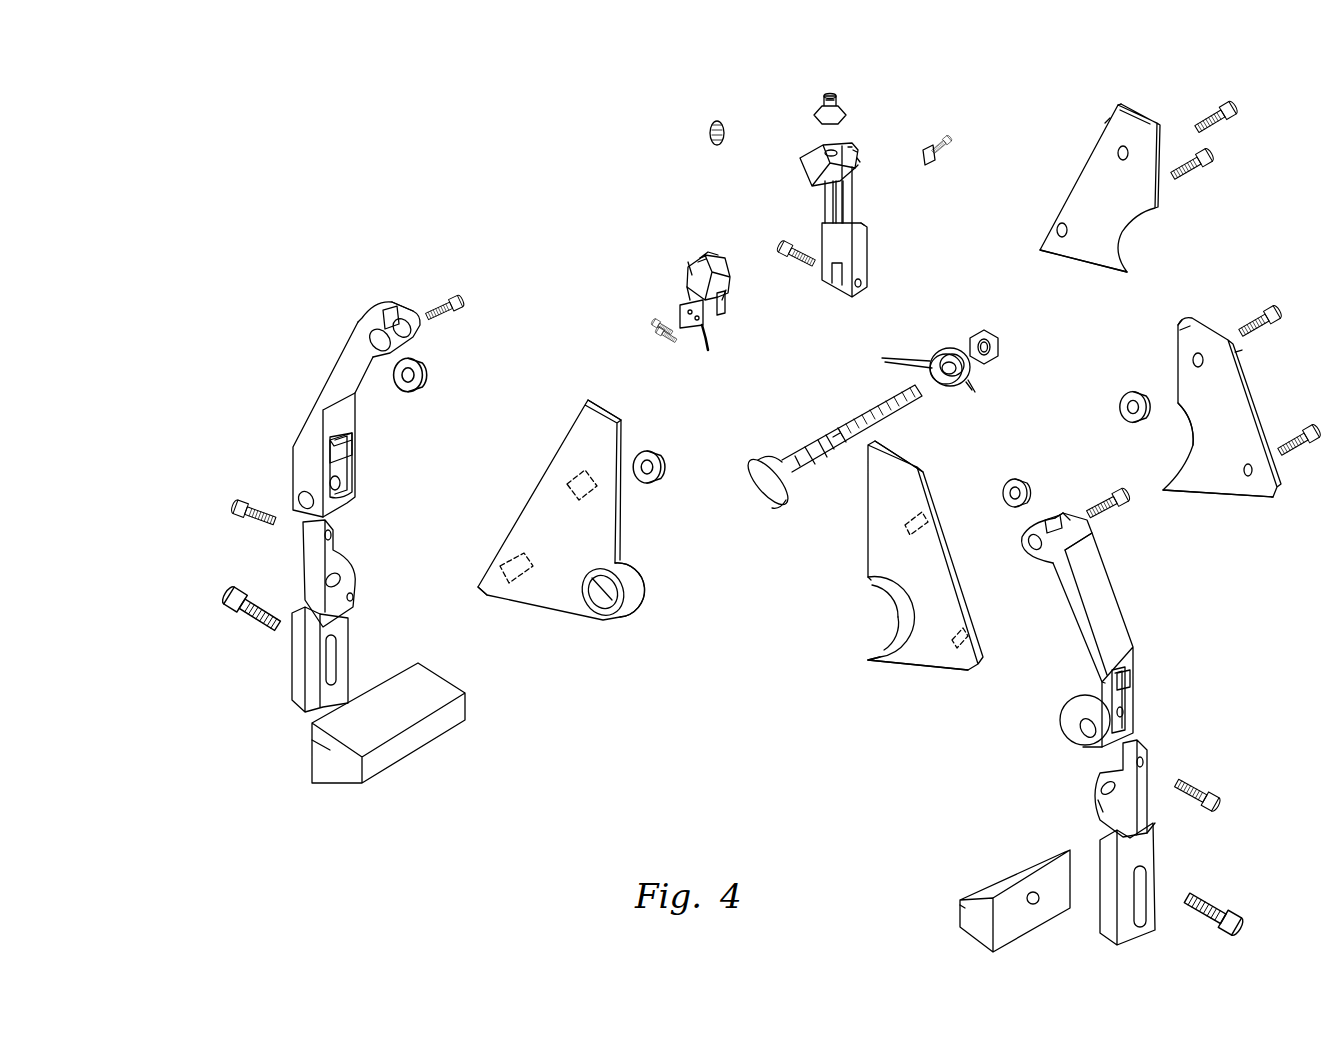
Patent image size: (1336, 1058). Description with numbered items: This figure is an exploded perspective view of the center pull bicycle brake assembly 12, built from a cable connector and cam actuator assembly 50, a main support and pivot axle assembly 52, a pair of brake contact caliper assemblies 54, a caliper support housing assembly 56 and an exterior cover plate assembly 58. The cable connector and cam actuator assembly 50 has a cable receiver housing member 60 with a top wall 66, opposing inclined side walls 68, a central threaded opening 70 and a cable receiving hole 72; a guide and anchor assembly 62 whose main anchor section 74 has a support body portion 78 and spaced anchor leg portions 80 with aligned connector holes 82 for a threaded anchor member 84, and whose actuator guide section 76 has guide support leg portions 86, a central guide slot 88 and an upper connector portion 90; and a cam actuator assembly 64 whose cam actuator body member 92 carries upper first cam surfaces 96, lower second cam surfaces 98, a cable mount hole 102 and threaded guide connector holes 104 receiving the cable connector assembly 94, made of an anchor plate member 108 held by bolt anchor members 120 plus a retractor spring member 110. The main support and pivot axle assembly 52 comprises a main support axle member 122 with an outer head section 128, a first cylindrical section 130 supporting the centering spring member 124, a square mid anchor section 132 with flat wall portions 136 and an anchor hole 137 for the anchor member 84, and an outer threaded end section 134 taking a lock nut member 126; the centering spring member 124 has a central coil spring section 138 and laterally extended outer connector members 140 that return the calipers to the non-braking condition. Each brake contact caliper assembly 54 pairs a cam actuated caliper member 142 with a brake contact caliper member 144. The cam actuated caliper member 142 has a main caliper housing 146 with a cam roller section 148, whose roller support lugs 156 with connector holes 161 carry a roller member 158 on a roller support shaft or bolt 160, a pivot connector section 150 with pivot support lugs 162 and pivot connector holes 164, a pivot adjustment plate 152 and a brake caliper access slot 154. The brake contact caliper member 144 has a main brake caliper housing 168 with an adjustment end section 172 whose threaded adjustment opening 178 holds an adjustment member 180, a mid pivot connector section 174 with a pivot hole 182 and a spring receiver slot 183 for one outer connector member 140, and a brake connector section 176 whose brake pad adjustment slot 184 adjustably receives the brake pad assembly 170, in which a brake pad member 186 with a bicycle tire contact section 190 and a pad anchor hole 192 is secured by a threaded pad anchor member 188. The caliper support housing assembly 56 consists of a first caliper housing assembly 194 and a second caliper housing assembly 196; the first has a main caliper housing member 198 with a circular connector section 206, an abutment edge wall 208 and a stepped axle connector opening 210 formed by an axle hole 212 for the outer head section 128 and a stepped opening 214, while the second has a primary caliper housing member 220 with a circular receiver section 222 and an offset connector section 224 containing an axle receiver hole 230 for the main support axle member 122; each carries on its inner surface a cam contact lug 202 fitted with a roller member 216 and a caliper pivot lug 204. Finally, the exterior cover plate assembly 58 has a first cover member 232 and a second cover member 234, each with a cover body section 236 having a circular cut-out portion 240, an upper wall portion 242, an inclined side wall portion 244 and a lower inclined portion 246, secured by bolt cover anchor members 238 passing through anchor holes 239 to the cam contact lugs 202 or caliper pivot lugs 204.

The center pull bicycle brake assembly 12 is at (560, 320).
The cable connector and cam actuator assembly 50 is at (890, 180).
The main support and pivot axle assembly 52 is at (935, 340).
The brake contact caliper assemblies 54 is at (326, 378).
The caliper support housing assembly 56 is at (535, 470).
The exterior cover plate assembly 58 is at (1068, 190).
The cable receiver housing member 60 is at (808, 185).
The guide and anchor assembly 62 is at (858, 160).
The cam actuator assembly 64 is at (729, 290).
The top wall 66 is at (838, 95).
The opposing inclined side walls 68 is at (848, 140).
The central threaded opening 70 is at (850, 145).
The cable receiving hole 72 is at (825, 93).
The main anchor section 74 is at (867, 250).
The actuator guide section 76 is at (852, 210).
The support body portion 78 is at (867, 240).
The anchor leg portions 80 is at (845, 295).
The connector hole 82 is at (862, 285).
The anchor member 84 is at (802, 268).
The guide support leg portions 86 is at (825, 225).
The central guide slot 88 is at (860, 195).
The upper connector portion 90 is at (855, 150).
The cam actuator body member 92 is at (700, 240).
The cable connector assembly 94 is at (700, 342).
The first cam surfaces 96 is at (690, 260).
The second cam surfaces 98 is at (688, 300).
The cable mount hole 102 is at (735, 255).
The guide connector holes 104 is at (690, 325).
The anchor plate member 108 is at (695, 312).
The retractor spring member 110 is at (725, 135).
The anchor members 120 is at (664, 322).
The main support axle member 122 is at (835, 440).
The centering spring member 124 is at (925, 358).
The lock nut member 126 is at (984, 330).
The outer head section 128 is at (760, 468).
The first cylindrical section 130 is at (785, 450).
The mid anchor section 132 is at (818, 462).
The outer threaded end section 134 is at (890, 400).
The outer flat wall portions 136 is at (830, 440).
The anchor hole 137 is at (840, 425).
The central coil spring section 138 is at (952, 388).
The outer connector members 140 is at (915, 368).
The cam actuated caliper member 142 is at (348, 352).
The brake contact caliper member 144 is at (315, 583).
The main caliper housing 146 is at (1133, 650).
The cam roller section 148 is at (1080, 565).
The pivot connector section 150 is at (1127, 703).
The pivot adjustment plate 152 is at (340, 440).
The brake caliper access slot 154 is at (335, 465).
The roller support lugs 156 is at (420, 340).
The roller member 158 is at (428, 368).
The roller support shaft or bolt 160 is at (455, 312).
The connector hole 161 is at (372, 336).
The pivot support lugs 162 is at (333, 488).
The pivot connector hole 164 is at (312, 500).
The main brake caliper housing 168 is at (1157, 840).
The brake pad assembly 170 is at (957, 915).
The adjustment end section 172 is at (1140, 785).
The mid pivot connector section 174 is at (1098, 805).
The brake connector section 176 is at (310, 670).
The threaded adjustment opening 178 is at (336, 548).
The adjustment member 180 is at (247, 508).
The pivot hole 182 is at (357, 595).
The spring receiver slot 183 is at (364, 588).
The brake pad adjustment slot 184 is at (335, 660).
The brake pad member 186 is at (318, 747).
The pad anchor member 188 is at (268, 603).
The bicycle tire contact section 190 is at (400, 760).
The pad anchor hole 192 is at (1033, 893).
The first caliper housing assembly 194 is at (545, 590).
The second caliper housing assembly 196 is at (905, 665).
The main caliper housing member 198 is at (605, 525).
The cam contact lug 202 is at (575, 470).
The caliper pivot lug 204 is at (525, 540).
The circular connector section 206 is at (625, 622).
The abutment edge wall 208 is at (622, 440).
The stepped axle connector opening 210 is at (617, 622).
The axle hole 212 is at (600, 588).
The stepped opening 214 is at (600, 605).
The roller member 216 is at (647, 497).
The primary caliper housing member 220 is at (857, 600).
The circular receiver section 222 is at (865, 620).
The offset connector section 224 is at (878, 632).
The axle receiver hole 230 is at (872, 657).
The first cover member 232 is at (1145, 205).
The second cover member 234 is at (1180, 357).
The cover body section 236 is at (1110, 165).
The cover anchor members 238 is at (1205, 118).
The anchor holes 239 is at (1123, 148).
The circular cut-out portion 240 is at (1193, 455).
The upper wall portion 242 is at (1120, 110).
The inclined side wall portion 244 is at (1105, 125).
The lower inclined portion 246 is at (1060, 257).